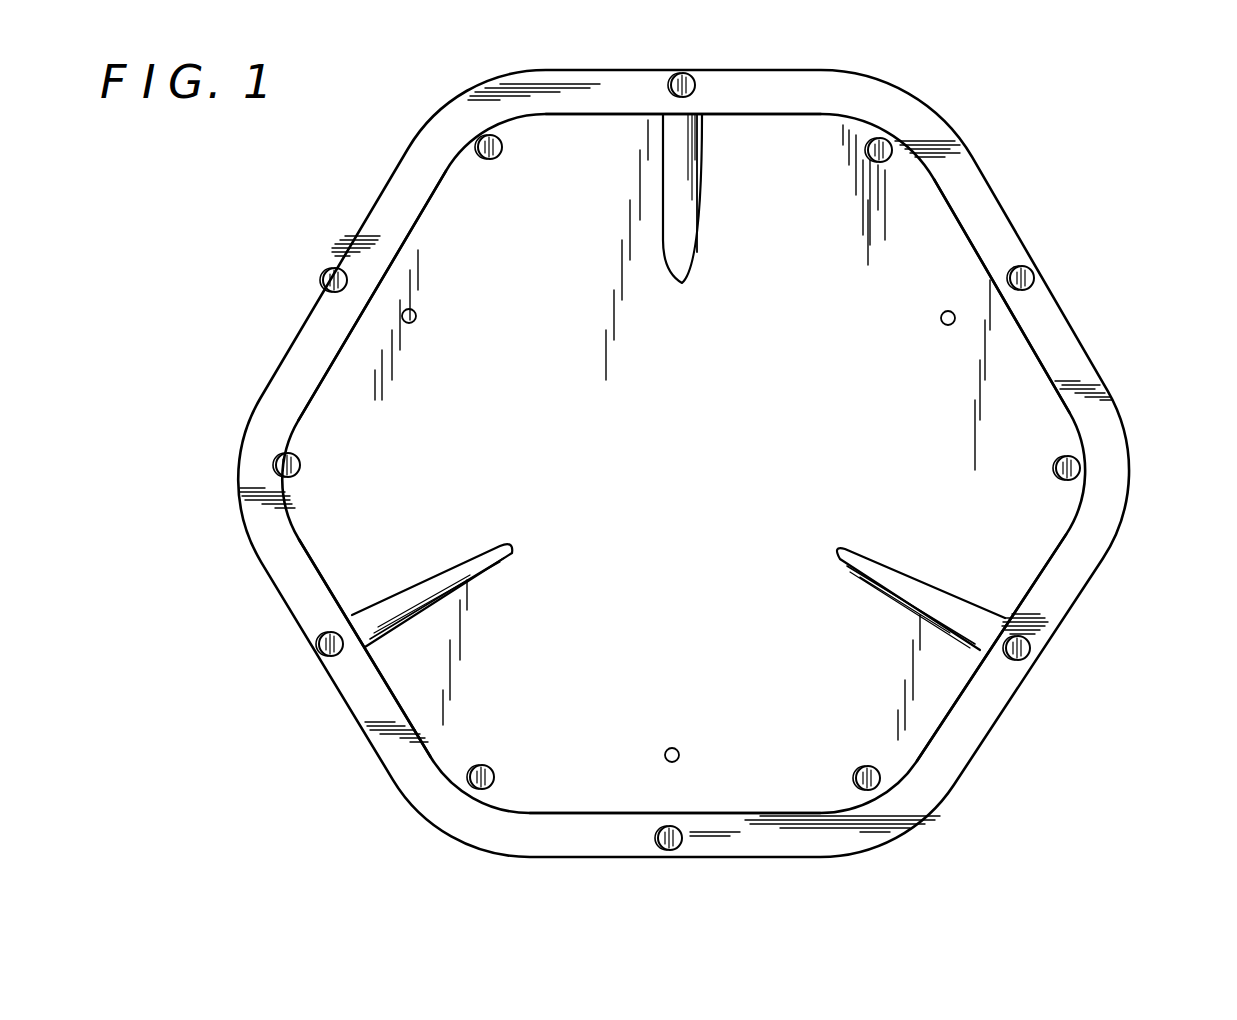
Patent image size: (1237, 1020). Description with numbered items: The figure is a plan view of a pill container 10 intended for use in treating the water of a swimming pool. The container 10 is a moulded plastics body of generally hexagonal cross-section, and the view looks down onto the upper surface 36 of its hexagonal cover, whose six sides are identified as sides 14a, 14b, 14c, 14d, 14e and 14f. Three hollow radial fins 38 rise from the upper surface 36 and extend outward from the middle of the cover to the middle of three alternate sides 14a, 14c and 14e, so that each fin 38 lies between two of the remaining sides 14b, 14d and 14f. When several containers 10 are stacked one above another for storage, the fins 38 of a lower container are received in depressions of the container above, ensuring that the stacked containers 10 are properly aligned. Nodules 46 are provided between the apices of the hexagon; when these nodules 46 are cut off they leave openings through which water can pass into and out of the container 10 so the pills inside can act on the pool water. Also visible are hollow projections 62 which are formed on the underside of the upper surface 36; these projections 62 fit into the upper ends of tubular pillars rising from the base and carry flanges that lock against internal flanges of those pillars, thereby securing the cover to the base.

The pill container 10 is at (1147, 160).
The side of the hexagonal cover 14a is at (1044, 584).
The side of the hexagonal cover 14b is at (540, 812).
The side of the hexagonal cover 14c is at (302, 546).
The side of the hexagonal cover 14d is at (305, 358).
The side of the hexagonal cover 14e is at (753, 114).
The side of the hexagonal cover 14f is at (1042, 378).
The upper surface 36 is at (893, 142).
The hollow radial fins 38 is at (700, 262).
The nodules 46 is at (322, 280).
The hollow projections 62 is at (420, 310).